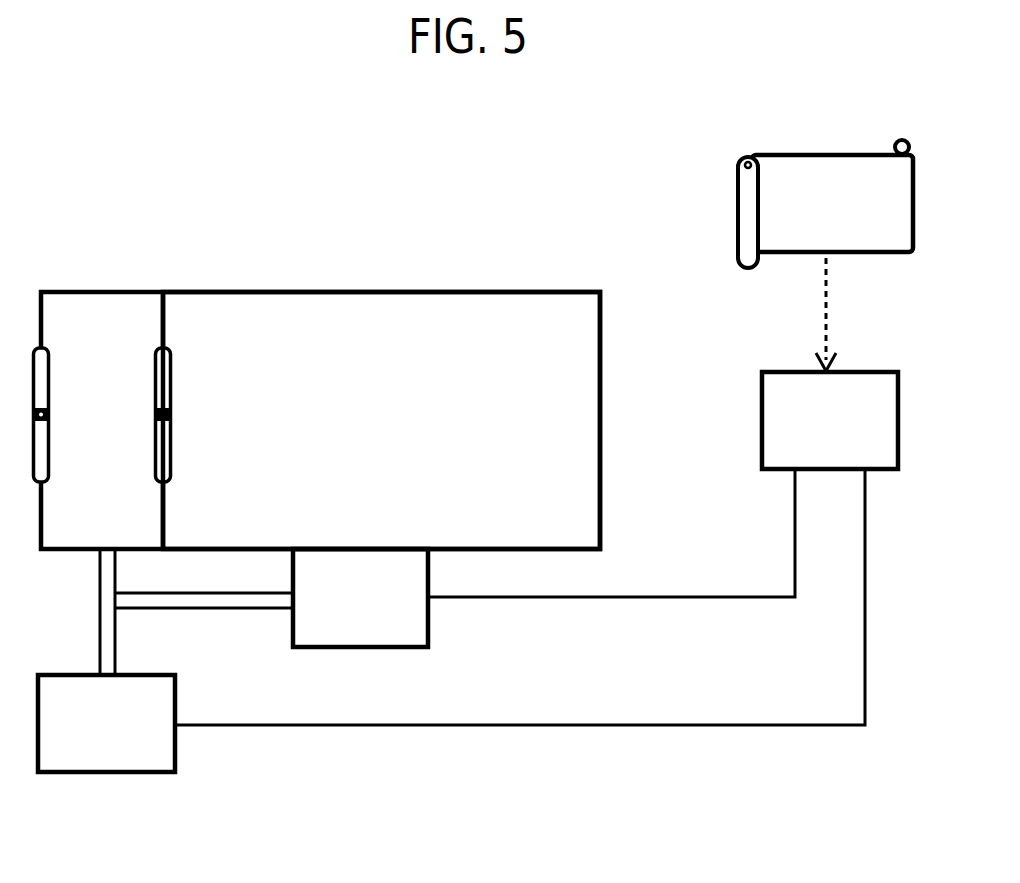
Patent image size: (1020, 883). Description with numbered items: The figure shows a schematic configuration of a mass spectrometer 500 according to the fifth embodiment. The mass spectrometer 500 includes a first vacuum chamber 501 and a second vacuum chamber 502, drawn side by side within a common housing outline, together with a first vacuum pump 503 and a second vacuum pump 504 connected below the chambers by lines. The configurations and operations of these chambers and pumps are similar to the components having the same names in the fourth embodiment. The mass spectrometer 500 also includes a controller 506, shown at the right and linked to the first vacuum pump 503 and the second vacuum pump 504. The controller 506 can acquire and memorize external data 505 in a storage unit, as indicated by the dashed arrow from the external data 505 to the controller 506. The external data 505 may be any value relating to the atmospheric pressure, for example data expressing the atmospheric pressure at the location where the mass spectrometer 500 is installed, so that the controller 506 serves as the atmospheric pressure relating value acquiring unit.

The mass spectrometer 500 is at (350, 258).
The first vacuum chamber 501 is at (102, 420).
The second vacuum chamber 502 is at (381, 420).
The first vacuum pump 503 is at (451, 620).
The second vacuum pump 504 is at (455, 558).
The external data 505 is at (825, 255).
The controller 506 is at (830, 420).